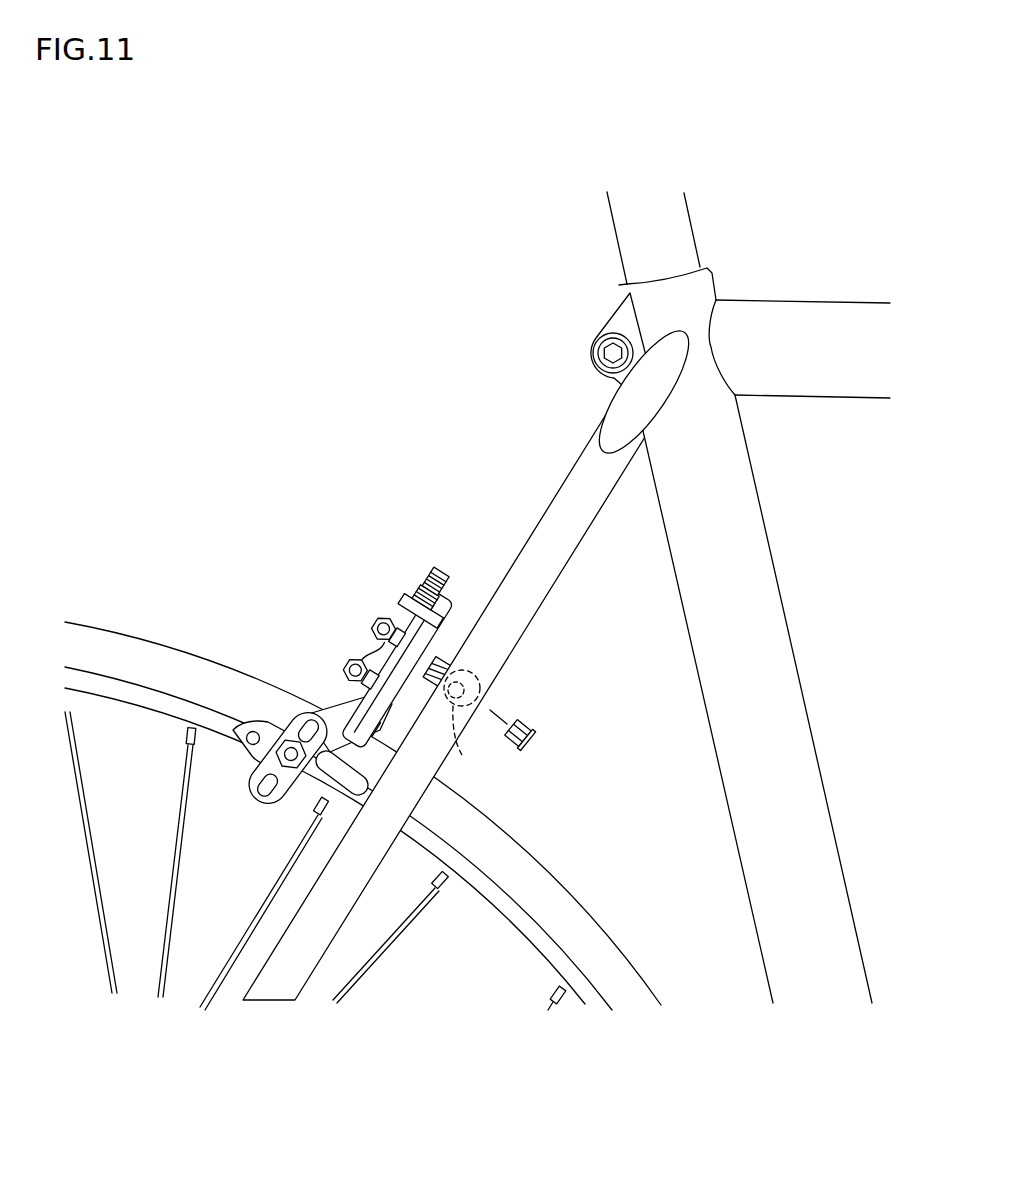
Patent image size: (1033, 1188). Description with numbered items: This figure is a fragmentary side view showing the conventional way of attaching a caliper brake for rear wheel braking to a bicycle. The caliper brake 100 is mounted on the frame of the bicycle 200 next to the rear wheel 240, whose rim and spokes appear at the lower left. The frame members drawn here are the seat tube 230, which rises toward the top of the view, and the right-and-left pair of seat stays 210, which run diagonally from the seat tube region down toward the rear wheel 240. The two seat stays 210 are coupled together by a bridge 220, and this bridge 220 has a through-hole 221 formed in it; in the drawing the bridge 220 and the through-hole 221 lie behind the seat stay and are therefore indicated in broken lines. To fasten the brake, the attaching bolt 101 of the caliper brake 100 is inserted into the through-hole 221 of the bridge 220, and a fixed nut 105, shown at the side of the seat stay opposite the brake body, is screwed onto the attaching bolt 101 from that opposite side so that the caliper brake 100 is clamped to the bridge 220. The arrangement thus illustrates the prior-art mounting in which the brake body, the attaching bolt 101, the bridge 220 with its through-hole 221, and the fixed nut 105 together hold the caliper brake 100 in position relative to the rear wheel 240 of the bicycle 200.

The caliper brake 100 is at (372, 577).
The attaching bolt 101 is at (478, 672).
The fixed nut 105 is at (532, 742).
The bicycle 200 is at (587, 298).
The seat stays 210 is at (563, 495).
The bridge 220 is at (480, 685).
The through-hole 221 is at (455, 748).
The seat tube 230 is at (750, 525).
The rear wheel 240 is at (133, 643).